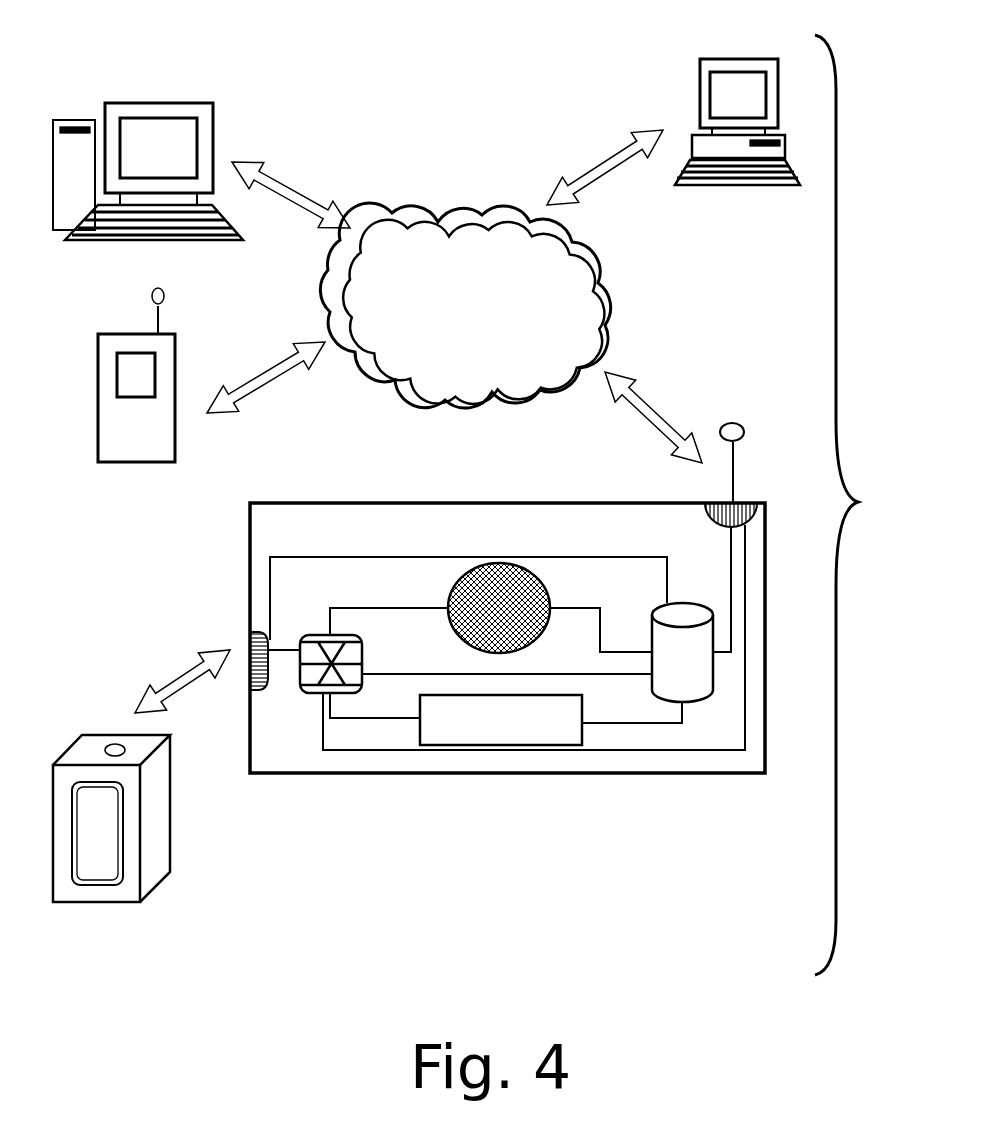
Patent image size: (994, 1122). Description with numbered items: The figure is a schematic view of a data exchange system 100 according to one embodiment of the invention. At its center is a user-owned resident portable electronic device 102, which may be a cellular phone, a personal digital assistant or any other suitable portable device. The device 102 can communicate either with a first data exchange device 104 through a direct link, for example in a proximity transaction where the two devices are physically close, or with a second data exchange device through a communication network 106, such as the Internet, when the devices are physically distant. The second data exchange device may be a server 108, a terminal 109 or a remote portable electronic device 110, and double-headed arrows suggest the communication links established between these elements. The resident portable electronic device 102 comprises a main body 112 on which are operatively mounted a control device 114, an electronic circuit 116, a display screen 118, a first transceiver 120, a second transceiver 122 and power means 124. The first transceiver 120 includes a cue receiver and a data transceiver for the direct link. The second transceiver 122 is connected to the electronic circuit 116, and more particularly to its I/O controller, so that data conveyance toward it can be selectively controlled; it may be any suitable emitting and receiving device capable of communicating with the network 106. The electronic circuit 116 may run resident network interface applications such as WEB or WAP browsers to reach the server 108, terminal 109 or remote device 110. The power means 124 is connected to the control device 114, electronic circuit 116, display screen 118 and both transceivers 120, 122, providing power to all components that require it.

The data exchange system 100 is at (861, 505).
The resident portable electronic device 102 is at (478, 691).
The data exchange device 104 is at (160, 882).
The network 106 is at (597, 265).
The server 108 is at (173, 103).
The terminal 109 is at (700, 70).
The remote portable electronic device 110 is at (175, 362).
The main body 112 is at (298, 500).
The control device 114 is at (494, 563).
The electronic circuit 116 is at (320, 695).
The display screen 118 is at (438, 745).
The first transceiver 120 is at (250, 652).
The second transceiver 122 is at (747, 503).
The power means 124 is at (713, 667).